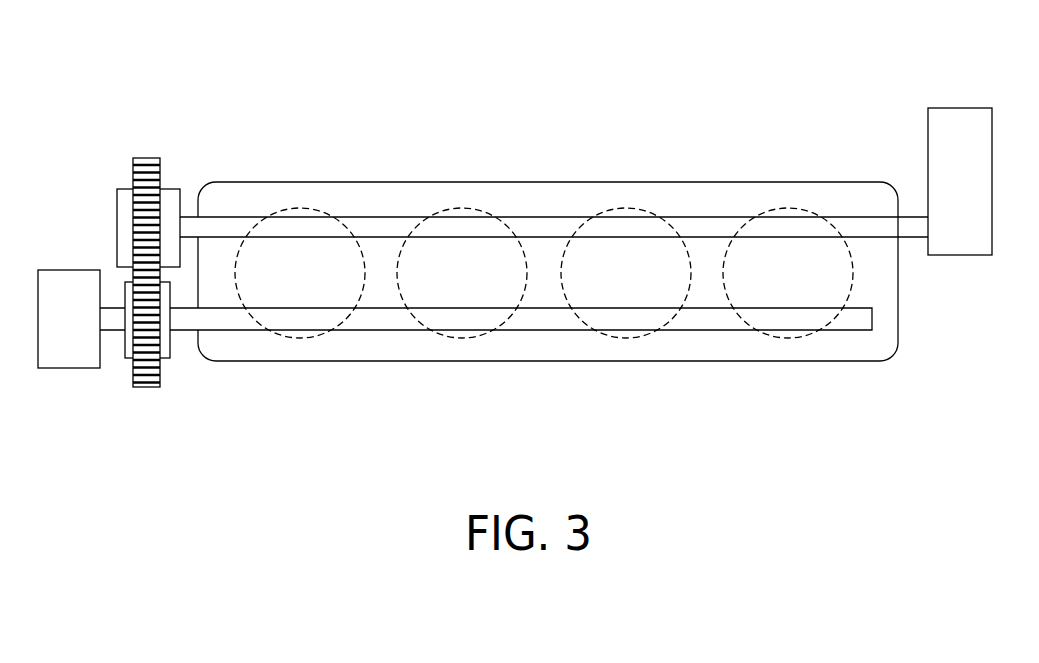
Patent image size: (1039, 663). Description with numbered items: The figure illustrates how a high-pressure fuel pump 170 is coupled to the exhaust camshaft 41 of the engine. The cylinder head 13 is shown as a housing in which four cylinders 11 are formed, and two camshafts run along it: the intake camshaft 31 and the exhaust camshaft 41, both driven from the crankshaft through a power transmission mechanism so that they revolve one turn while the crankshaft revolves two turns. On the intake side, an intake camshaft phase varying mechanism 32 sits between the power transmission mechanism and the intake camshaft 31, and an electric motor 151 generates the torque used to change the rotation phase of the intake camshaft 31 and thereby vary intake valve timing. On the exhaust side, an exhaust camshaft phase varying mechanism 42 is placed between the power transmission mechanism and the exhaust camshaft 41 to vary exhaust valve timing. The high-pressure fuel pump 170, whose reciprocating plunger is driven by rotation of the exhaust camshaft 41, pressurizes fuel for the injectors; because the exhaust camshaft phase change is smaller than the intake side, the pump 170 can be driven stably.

The cylinder 11 is at (298, 208).
The cylinder head 13 is at (385, 200).
The intake camshaft 31 is at (222, 322).
The intake camshaft phase varying mechanism 32 is at (146, 400).
The exhaust camshaft 41 is at (226, 232).
The exhaust camshaft phase varying mechanism 42 is at (128, 198).
The electric motor 151 is at (67, 348).
The high-pressure fuel pump 170 is at (962, 108).